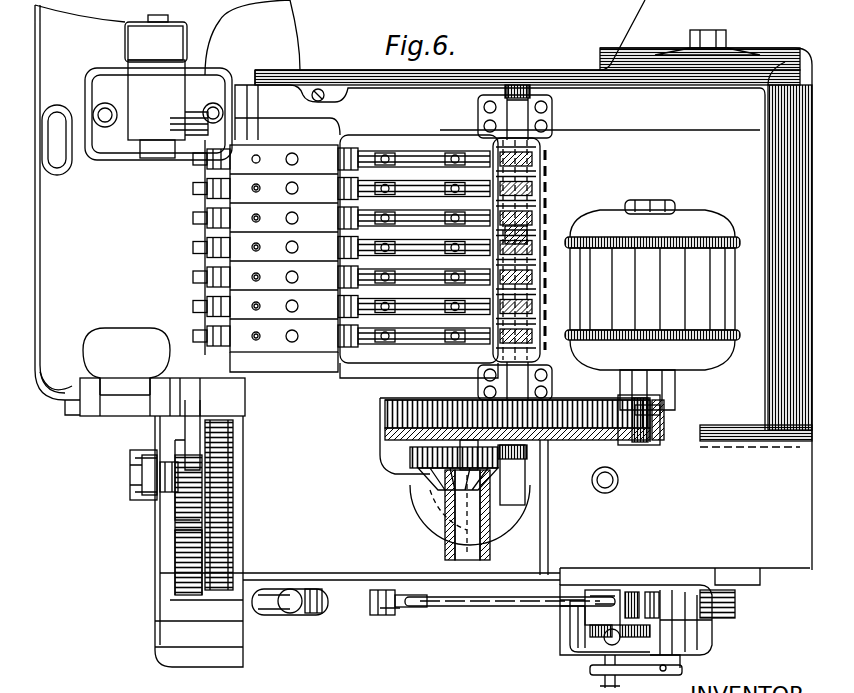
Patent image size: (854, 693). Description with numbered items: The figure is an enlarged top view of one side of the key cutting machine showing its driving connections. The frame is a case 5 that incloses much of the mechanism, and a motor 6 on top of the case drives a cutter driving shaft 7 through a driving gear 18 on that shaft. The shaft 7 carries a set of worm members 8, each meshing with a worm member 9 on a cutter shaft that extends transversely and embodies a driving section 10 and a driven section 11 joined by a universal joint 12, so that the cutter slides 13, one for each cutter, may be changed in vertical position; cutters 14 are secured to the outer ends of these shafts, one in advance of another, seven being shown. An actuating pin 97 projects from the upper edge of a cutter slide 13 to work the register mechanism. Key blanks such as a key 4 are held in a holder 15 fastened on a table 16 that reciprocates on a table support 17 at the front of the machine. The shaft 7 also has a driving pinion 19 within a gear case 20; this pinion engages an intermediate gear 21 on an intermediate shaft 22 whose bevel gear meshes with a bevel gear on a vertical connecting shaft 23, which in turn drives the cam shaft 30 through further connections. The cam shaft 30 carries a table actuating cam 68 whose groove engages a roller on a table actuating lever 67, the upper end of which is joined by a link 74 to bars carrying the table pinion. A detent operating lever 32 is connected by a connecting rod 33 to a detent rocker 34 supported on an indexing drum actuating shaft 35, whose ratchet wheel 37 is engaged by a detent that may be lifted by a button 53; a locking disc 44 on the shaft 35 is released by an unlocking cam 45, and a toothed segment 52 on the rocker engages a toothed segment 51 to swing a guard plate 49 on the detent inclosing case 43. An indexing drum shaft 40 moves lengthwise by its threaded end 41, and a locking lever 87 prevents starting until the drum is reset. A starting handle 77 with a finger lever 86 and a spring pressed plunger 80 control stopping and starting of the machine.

The key 4 is at (172, 122).
The case 5 is at (533, 285).
The motor 6 is at (700, 246).
The cutter driving shaft 7 is at (520, 86).
The worm members 8 is at (536, 190).
The worm member 9 is at (530, 247).
The driving section 10 is at (467, 345).
The driven section 11 is at (328, 340).
The universal joint 12 is at (407, 152).
The cutter slides 13 is at (276, 340).
The cutters 14 is at (198, 222).
The holder 15 is at (208, 108).
The table 16 is at (107, 45).
The table support 17 is at (92, 410).
The driving gear 18 is at (617, 436).
The driving pinion 19 is at (540, 455).
The gear case 20 is at (410, 458).
The intermediate gear 21 is at (418, 472).
The intermediate shaft 22 is at (477, 552).
The connecting shaft 23 is at (430, 512).
The cam shaft 30 is at (130, 476).
The detent operating lever 32 is at (380, 614).
The connecting rod 33 is at (481, 606).
The detent rocker 34 is at (608, 598).
The indexing drum actuating shaft 35 is at (604, 685).
The ratchet wheel 37 is at (578, 645).
The indexing drum shaft 40 is at (712, 30).
The threaded end 41 is at (735, 603).
The detent inclosing case 43 is at (684, 592).
The locking disc 44 is at (590, 631).
The unlocking cam 45 is at (578, 618).
The guard plate 49 is at (672, 672).
The toothed segment 51 is at (652, 590).
The toothed segment 52 is at (632, 590).
The button 53 is at (606, 642).
The table actuating lever 67 is at (178, 583).
The table actuating cam 68 is at (222, 566).
The link 74 is at (200, 412).
The starting handle 77 is at (291, 614).
The spring pressed plunger 80 is at (310, 612).
The finger lever 86 is at (268, 616).
The locking lever 87 is at (618, 482).
The actuating pin 97 is at (258, 155).